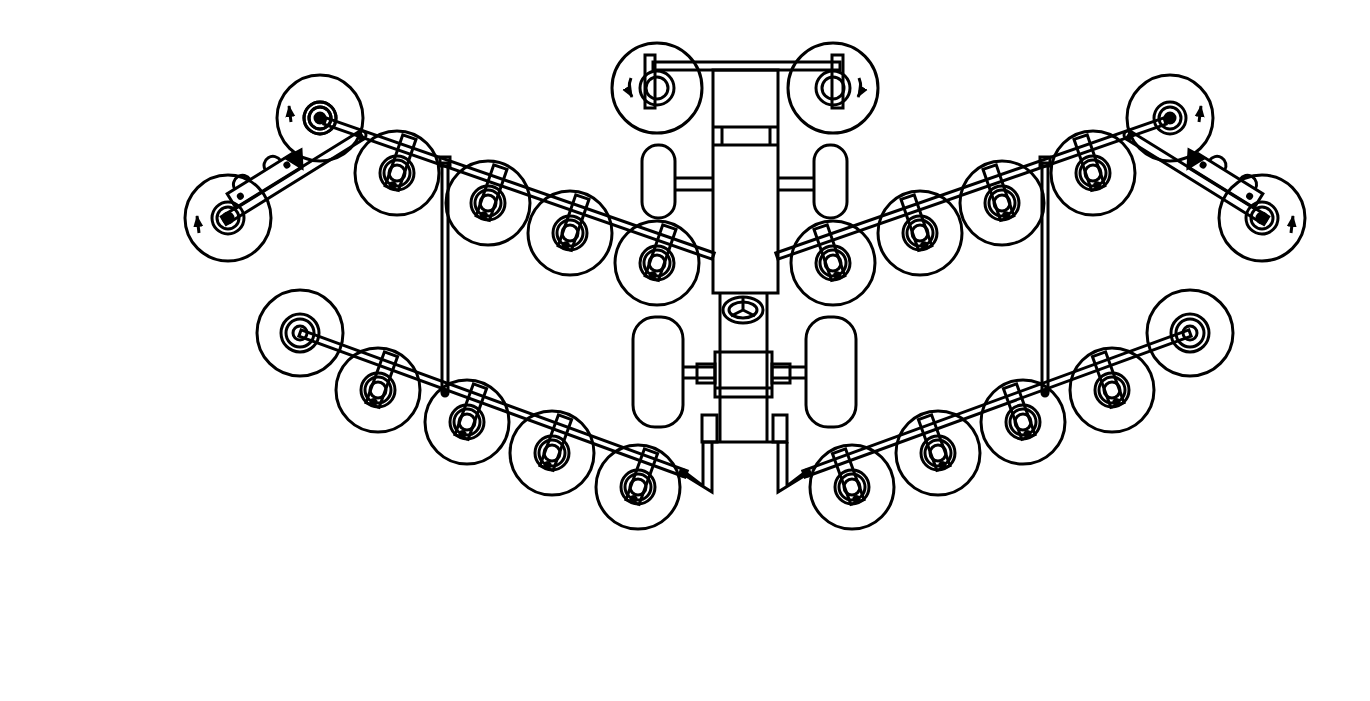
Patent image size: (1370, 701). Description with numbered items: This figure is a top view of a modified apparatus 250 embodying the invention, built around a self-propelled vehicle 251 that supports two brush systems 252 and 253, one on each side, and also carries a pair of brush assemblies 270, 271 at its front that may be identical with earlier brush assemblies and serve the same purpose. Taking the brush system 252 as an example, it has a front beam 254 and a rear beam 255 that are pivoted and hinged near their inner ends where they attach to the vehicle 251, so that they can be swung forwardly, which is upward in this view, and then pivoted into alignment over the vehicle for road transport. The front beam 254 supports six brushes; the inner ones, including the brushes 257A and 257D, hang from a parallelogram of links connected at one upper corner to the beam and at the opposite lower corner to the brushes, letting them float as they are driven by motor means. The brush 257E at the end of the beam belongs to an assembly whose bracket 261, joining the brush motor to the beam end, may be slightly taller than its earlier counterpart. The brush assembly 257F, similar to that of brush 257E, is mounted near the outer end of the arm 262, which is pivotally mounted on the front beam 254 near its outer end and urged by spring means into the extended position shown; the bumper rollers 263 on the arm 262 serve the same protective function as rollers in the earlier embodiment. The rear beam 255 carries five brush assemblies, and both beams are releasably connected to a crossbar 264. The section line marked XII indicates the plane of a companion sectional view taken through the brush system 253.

The apparatus 250 is at (988, 82).
The self-propelled vehicle 251 is at (782, 162).
The brush system 252 is at (439, 117).
The brush system 253 is at (1037, 101).
The front beam 254 is at (535, 194).
The rear beam 255 is at (521, 408).
The brush 257A is at (621, 298).
The brush 257D is at (383, 220).
The brush 257E is at (286, 88).
The brush assembly 257F is at (182, 229).
The bracket 261 is at (320, 114).
The arm 262 is at (284, 178).
The bumper rollers 263 is at (228, 172).
The crossbar 264 is at (443, 292).
The brush assembly 270 is at (622, 57).
The brush assembly 271 is at (866, 52).
The section line XII- XII is at (1045, 158).